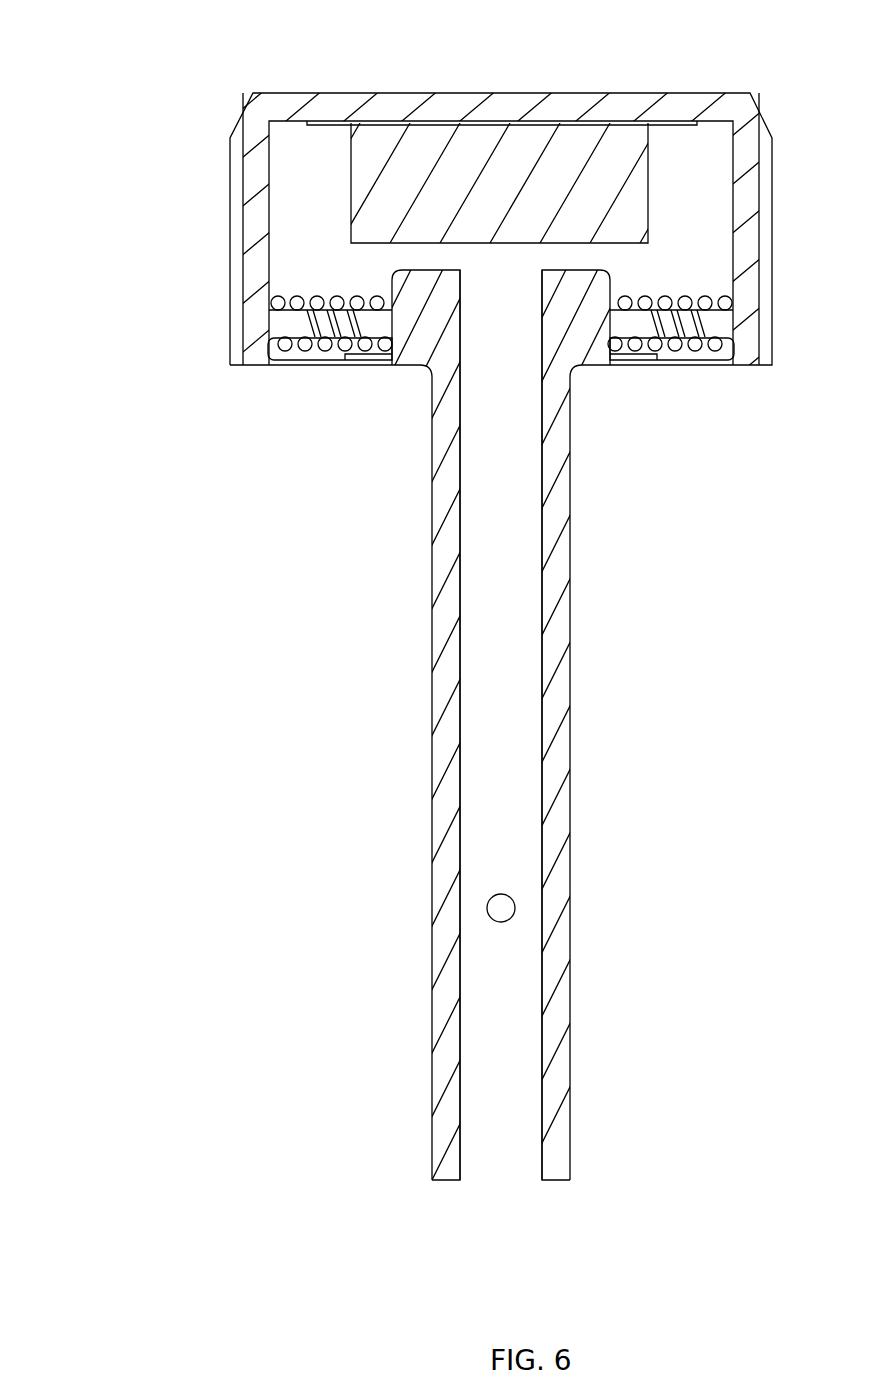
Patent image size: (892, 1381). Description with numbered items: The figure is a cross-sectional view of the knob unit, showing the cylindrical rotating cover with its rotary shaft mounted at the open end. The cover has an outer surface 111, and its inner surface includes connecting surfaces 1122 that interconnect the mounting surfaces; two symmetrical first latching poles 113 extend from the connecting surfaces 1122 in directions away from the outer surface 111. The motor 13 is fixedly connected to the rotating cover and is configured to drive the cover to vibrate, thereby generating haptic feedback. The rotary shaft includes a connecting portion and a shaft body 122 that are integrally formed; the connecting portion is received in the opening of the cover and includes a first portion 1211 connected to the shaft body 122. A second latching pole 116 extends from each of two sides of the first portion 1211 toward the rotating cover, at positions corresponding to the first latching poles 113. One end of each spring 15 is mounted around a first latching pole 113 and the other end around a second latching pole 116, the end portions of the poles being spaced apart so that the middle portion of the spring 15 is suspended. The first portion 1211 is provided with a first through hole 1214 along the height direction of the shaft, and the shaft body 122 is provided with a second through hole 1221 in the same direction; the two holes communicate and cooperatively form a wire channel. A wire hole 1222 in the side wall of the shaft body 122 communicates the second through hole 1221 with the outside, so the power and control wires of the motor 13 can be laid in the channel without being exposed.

The outer surface 111 is at (243, 230).
The connecting surface 1122 is at (268, 165).
The motor 13 is at (498, 173).
The first latching pole 113 is at (290, 323).
The spring 15 is at (305, 340).
The second latching pole 116 is at (373, 323).
The first portion 1211 is at (567, 328).
The first through hole 1214 is at (496, 318).
The second through hole 1221 is at (492, 612).
The shaft body 122 is at (552, 767).
The wire hole 1222 is at (502, 910).